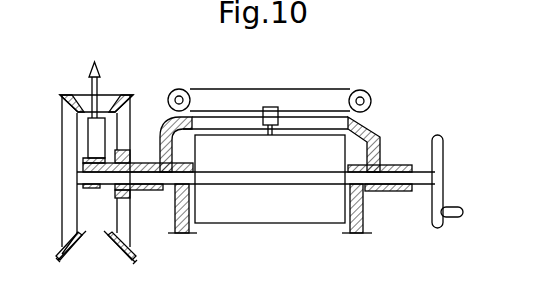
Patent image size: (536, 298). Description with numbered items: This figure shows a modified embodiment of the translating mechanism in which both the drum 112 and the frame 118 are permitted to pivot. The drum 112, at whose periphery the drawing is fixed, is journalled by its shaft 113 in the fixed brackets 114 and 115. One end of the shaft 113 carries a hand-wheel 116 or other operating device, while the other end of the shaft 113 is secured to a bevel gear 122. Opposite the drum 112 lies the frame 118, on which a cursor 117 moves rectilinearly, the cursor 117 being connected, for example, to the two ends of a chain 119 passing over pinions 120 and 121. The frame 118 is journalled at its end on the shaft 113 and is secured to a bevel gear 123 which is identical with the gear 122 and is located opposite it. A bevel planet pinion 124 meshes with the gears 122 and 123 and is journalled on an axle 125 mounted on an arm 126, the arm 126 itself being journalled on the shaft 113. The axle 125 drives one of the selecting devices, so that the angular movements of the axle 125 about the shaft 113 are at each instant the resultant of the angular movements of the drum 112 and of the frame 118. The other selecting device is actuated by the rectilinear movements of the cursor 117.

The drum 112 is at (260, 202).
The shaft 113 is at (150, 174).
The fixed bracket 114 is at (357, 235).
The fixed bracket 115 is at (183, 234).
The hand-wheel 116 is at (437, 155).
The cursor 117 is at (272, 112).
The frame 118 is at (312, 123).
The chain 119 is at (232, 95).
The pinion 120 is at (180, 95).
The pinion 121 is at (358, 93).
The bevel gear 122 is at (72, 193).
The bevel gear 123 is at (118, 220).
The bevel planet pinion 124 is at (100, 102).
The axle 125 is at (92, 84).
The arm 126 is at (97, 143).